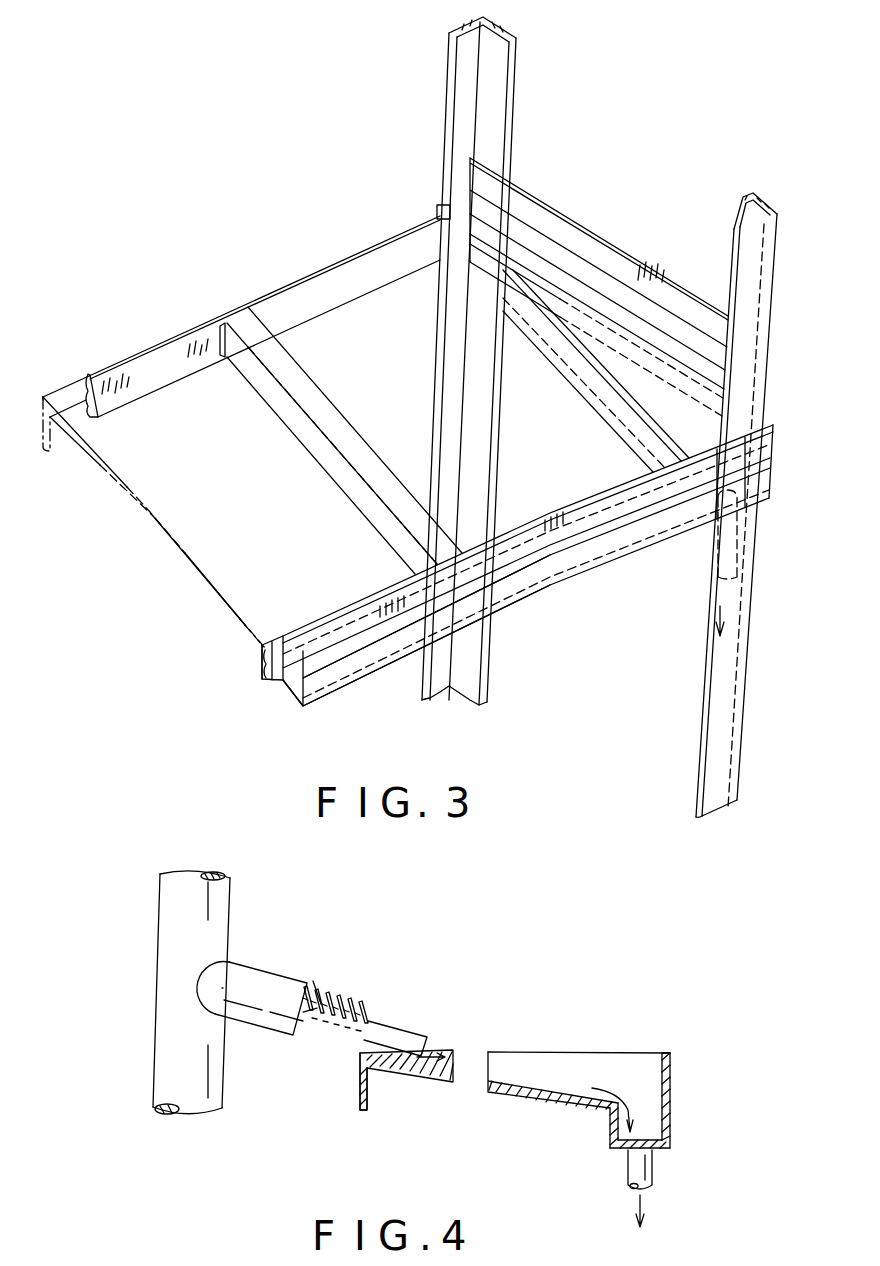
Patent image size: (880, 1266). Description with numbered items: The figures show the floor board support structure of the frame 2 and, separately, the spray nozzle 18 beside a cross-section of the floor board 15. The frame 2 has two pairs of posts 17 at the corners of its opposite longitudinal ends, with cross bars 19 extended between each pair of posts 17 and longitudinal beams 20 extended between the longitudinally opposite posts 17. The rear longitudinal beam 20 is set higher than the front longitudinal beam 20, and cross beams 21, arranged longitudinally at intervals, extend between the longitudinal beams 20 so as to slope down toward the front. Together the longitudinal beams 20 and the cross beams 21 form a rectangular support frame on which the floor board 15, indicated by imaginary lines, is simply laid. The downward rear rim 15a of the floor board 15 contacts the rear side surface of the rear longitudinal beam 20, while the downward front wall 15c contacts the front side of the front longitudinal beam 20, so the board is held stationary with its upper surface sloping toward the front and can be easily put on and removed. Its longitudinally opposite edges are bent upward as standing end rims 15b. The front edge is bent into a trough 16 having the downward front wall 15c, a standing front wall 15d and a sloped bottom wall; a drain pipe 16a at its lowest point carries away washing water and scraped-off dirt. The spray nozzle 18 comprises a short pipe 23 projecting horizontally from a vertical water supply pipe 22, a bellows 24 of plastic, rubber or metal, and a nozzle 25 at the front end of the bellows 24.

In FIG. 3, the frame 2 is at (603, 60).
In FIG. 3, the floor board 15 is at (152, 508).
In FIG. 4, the floor board 15 is at (503, 1082).
In FIG. 3, the rear rim 15a is at (57, 445).
In FIG. 4, the rear rim 15a is at (370, 1093).
In FIG. 3, the standing end rims 15b is at (555, 293).
In FIG. 3, the downward front wall 15c is at (257, 667).
In FIG. 4, the downward front wall 15c is at (610, 1127).
In FIG. 3, the standing front wall 15d is at (358, 662).
In FIG. 4, the standing front wall 15d is at (670, 1090).
In FIG. 3, the trough 16 is at (290, 663).
In FIG. 4, the trough 16 is at (645, 1137).
In FIG. 3, the drain pipe 16a is at (735, 540).
In FIG. 4, the drain pipe 16a is at (627, 1168).
In FIG. 3, the posts 17 is at (500, 110).
In FIG. 4, the spray nozzle 18 is at (255, 950).
In FIG. 3, the cross bars 19 is at (628, 268).
In FIG. 3, the longitudinal beams 20 is at (277, 312).
In FIG. 3, the cross beams 21 is at (272, 372).
In FIG. 4, the vertical water supply pipe 22 is at (167, 948).
In FIG. 4, the short pipe 23 is at (273, 987).
In FIG. 4, the bellows 24 is at (317, 1040).
In FIG. 4, the nozzle 25 is at (397, 1030).